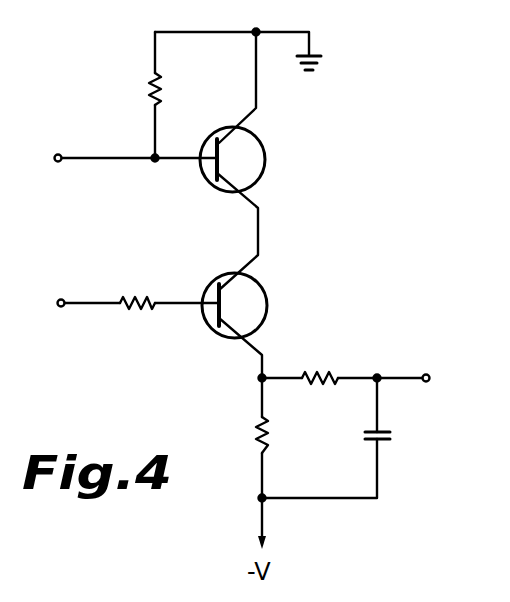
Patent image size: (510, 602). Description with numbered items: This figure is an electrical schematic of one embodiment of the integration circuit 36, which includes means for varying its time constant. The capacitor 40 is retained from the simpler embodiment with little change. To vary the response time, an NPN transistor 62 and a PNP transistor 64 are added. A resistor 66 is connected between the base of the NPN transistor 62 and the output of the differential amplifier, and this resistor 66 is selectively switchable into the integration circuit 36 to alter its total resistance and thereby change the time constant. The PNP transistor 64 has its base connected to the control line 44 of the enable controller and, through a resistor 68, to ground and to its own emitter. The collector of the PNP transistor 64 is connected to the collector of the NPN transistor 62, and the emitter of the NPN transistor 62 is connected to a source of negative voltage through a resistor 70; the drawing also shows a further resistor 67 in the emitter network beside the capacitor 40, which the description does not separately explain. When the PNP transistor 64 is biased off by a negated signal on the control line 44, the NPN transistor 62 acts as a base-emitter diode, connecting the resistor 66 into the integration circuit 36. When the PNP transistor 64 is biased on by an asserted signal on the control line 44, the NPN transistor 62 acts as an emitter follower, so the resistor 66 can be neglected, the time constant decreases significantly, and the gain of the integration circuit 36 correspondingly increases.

The integration circuit 36 is at (342, 172).
The capacitor 40 is at (391, 430).
The control line 44 is at (57, 151).
The NPN transistor 62 is at (267, 300).
The PNP transistor 64 is at (265, 152).
The resistor 66 is at (126, 295).
The resistor 67 is at (322, 370).
The resistor 68 is at (149, 88).
The resistor 70 is at (252, 437).